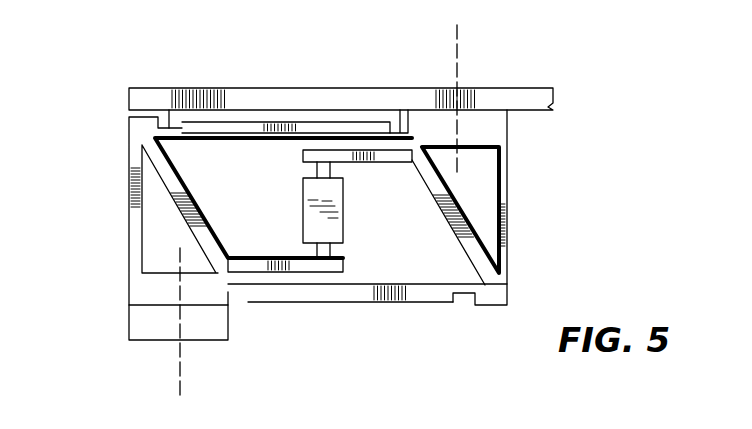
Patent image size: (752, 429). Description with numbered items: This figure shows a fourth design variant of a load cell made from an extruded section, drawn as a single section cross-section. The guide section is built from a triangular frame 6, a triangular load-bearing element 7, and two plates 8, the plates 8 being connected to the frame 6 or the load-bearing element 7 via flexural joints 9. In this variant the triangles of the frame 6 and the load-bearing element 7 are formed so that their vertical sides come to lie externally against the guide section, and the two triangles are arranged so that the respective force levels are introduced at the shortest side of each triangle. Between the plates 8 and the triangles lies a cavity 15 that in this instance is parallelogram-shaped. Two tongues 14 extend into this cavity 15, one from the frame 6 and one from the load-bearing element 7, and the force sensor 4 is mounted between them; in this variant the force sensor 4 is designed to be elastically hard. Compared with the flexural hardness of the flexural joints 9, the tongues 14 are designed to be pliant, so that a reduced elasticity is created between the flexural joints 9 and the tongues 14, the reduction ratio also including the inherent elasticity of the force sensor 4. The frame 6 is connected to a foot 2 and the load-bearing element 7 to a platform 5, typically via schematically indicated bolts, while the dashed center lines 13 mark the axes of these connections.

The foot 2 is at (135, 322).
The force sensor 4 is at (301, 210).
The platform 5 is at (551, 104).
The frame 6 is at (140, 286).
The load-bearing element 7 is at (497, 128).
The plate 8 is at (248, 127).
The flexural joint 9 is at (170, 123).
The center line 13 is at (458, 89).
The tongue 14 is at (357, 156).
The cavity 15 is at (433, 230).